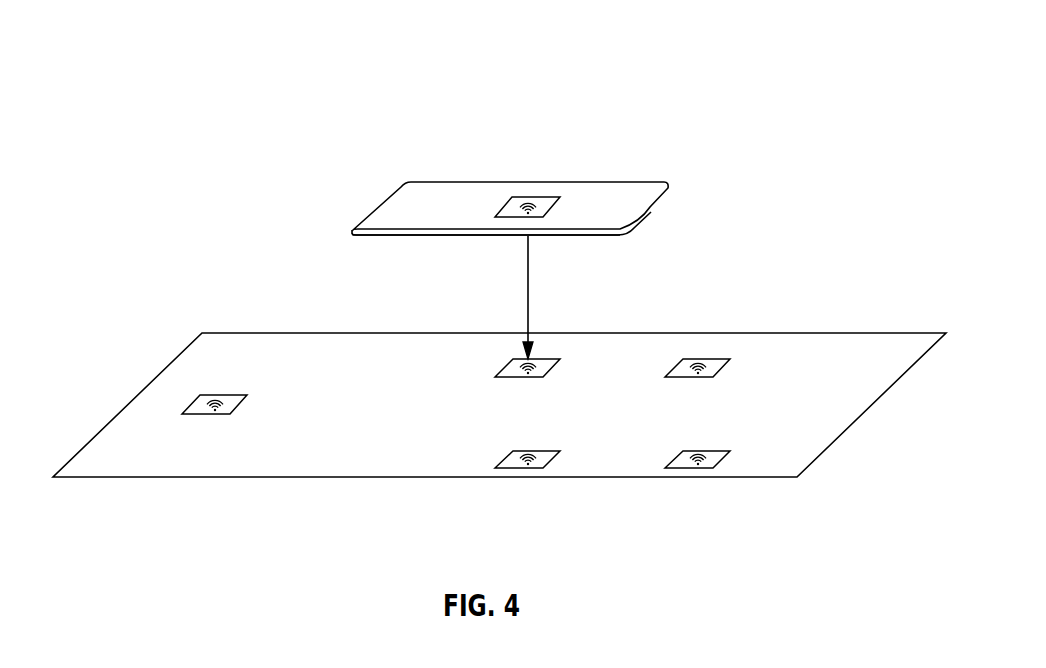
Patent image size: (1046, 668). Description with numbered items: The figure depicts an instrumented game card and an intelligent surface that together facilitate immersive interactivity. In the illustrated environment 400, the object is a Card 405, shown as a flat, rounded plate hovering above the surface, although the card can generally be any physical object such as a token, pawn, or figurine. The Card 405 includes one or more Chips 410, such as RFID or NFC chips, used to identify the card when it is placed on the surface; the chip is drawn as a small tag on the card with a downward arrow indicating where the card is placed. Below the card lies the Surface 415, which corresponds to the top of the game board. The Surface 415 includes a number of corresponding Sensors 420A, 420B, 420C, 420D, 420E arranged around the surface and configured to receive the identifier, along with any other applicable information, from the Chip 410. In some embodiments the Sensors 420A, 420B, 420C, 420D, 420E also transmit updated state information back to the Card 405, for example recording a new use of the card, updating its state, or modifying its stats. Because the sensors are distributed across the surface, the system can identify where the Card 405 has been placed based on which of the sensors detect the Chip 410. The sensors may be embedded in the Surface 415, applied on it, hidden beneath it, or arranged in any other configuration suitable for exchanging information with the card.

The environment 400 is at (203, 68).
The card 405 is at (619, 181).
The chip 410 is at (530, 199).
The surface 415 is at (198, 343).
The sensor 420A is at (240, 404).
The sensor 420B is at (552, 367).
The sensor 420C is at (552, 459).
The sensor 420D is at (722, 367).
The sensor 420E is at (722, 459).